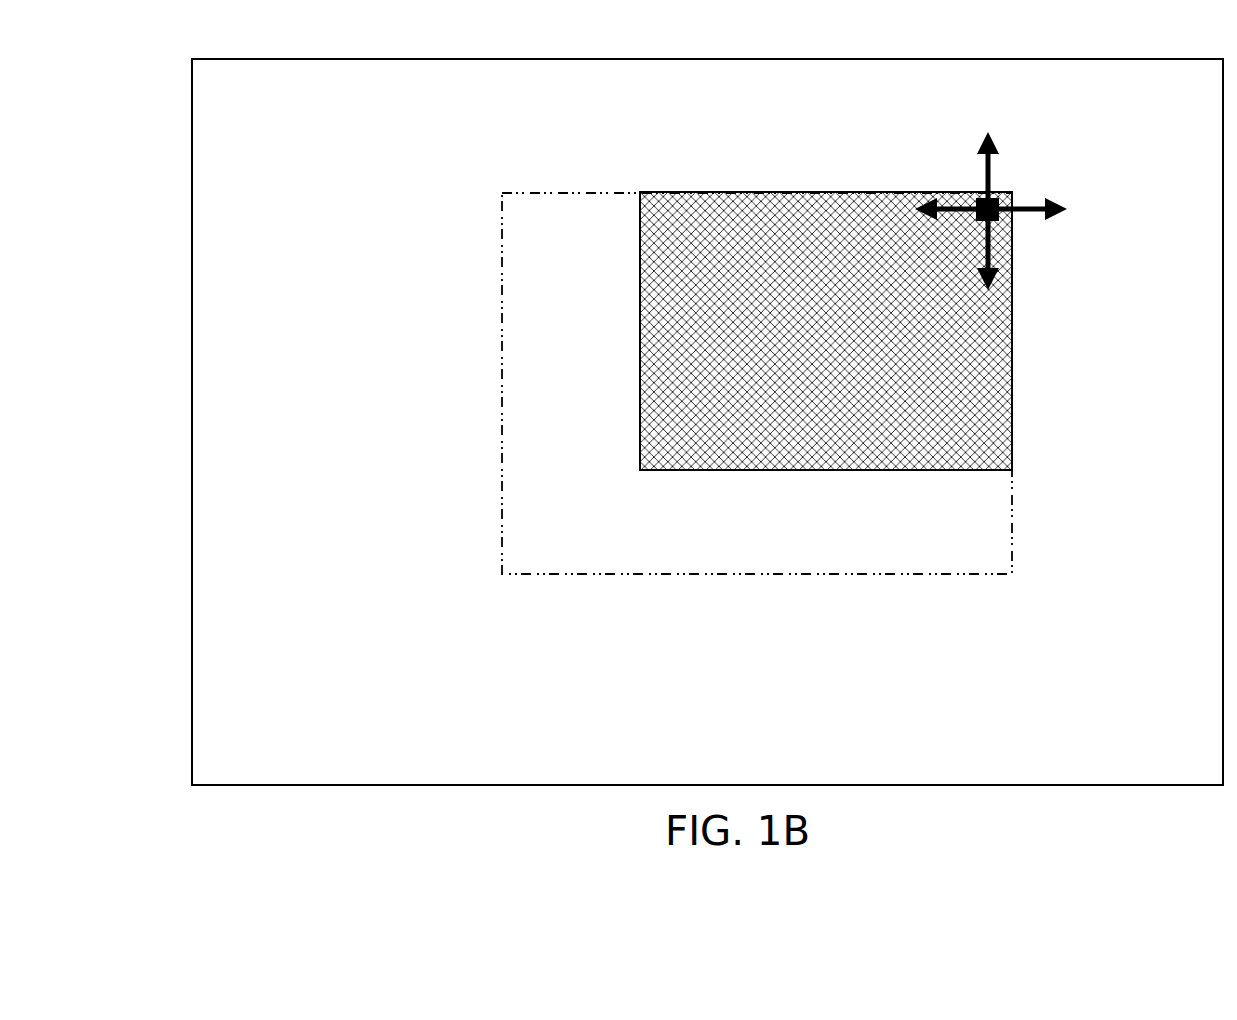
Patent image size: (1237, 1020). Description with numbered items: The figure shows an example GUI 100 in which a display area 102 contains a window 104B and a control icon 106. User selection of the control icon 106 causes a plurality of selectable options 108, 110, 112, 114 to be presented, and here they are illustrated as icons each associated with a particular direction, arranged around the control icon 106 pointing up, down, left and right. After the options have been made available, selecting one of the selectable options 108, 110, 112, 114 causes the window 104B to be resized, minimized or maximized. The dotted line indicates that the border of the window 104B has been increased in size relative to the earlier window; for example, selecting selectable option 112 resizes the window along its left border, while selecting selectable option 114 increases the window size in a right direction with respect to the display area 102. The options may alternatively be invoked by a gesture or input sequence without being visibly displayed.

The GUI 100 is at (707, 392).
The display area 102 is at (200, 288).
The window 104B is at (494, 190).
The control icon 106 is at (1005, 193).
The selectable option 108 is at (970, 140).
The selectable option 110 is at (999, 302).
The selectable option 112 is at (905, 205).
The selectable option 114 is at (1072, 215).